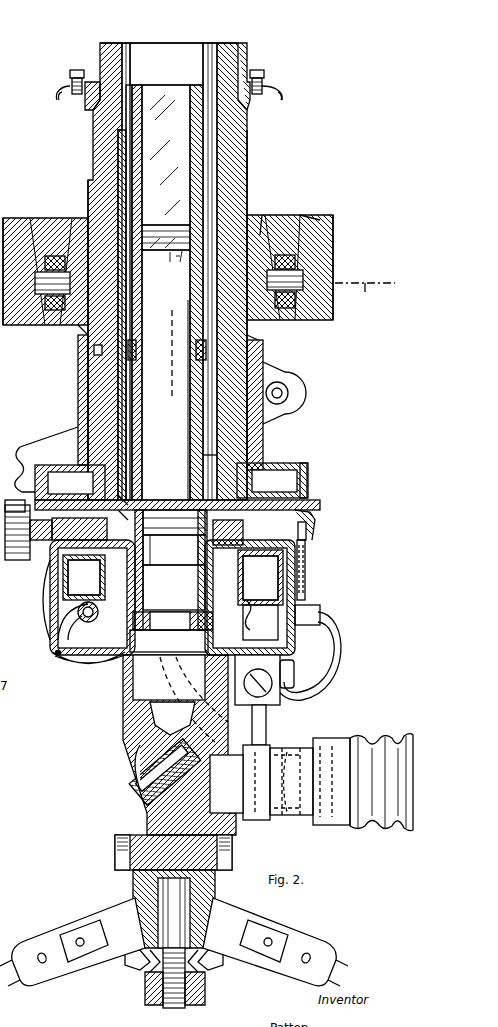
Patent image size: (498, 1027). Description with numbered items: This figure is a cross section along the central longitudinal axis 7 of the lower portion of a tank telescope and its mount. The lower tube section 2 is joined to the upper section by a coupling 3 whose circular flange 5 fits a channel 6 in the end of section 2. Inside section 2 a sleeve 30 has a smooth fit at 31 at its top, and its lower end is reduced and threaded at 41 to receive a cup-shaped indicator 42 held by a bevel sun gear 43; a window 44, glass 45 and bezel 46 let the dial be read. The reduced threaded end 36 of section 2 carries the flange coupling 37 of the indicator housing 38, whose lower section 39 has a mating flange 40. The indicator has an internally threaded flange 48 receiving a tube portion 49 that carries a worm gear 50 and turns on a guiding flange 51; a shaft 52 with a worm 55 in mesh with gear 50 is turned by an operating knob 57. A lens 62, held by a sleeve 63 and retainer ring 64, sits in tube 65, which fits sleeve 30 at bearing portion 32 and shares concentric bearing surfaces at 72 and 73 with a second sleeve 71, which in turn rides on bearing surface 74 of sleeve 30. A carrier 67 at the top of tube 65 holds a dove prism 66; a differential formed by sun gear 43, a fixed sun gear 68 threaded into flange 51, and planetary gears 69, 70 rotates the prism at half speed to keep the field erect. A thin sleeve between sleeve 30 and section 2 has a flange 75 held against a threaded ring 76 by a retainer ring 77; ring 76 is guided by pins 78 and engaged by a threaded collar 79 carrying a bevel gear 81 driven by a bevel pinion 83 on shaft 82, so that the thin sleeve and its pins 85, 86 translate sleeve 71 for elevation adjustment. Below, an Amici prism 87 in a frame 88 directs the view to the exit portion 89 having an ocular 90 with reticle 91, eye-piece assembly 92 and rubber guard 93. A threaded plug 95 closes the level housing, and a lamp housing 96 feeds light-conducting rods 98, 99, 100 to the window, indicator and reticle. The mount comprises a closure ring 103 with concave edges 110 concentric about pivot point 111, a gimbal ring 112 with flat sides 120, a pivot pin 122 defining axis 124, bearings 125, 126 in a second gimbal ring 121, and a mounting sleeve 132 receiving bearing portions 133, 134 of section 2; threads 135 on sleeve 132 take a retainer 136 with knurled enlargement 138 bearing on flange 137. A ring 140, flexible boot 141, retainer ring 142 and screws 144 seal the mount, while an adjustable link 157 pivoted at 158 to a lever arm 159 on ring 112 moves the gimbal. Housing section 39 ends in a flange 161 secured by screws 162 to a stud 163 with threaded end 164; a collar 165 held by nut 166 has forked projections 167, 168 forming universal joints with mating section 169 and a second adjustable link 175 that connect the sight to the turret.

The lower tube section 2 is at (232, 146).
The coupling 3 is at (226, 43).
The circular flange 5 is at (240, 60).
The channel 6 is at (103, 60).
The common central axis 7 is at (174, 340).
The sleeve 30 is at (120, 142).
The smooth fit 31 is at (210, 46).
The bearing portion 32 is at (143, 510).
The reduced threaded lower end 36 is at (272, 480).
The flange coupling 37 is at (308, 506).
The indicator housing 38 is at (311, 551).
The lower housing section 39 is at (57, 657).
The flange 40 is at (315, 515).
The reduced threaded end 41 is at (143, 568).
The cup-shaped indicator 42 is at (310, 600).
The bevel sun gear 43 is at (250, 597).
The window 44 is at (306, 563).
The glass 45 is at (306, 578).
The bezel 46 is at (306, 534).
The internally-threaded flange 48 is at (100, 558).
The tube portion 49 is at (252, 608).
The worm gear 50 is at (260, 622).
The guiding flange 51 is at (86, 622).
The shaft 52 is at (60, 630).
The worm 55 is at (60, 622).
The operating knob 57 is at (88, 668).
The lens 62 is at (174, 552).
The sleeve 63 is at (144, 590).
The retainer ring 64 is at (173, 622).
The tube 65 is at (200, 410).
The dove prism 66 is at (166, 375).
The carrier 67 is at (148, 203).
The sun gear 68 is at (169, 642).
The planetary gear 69 is at (84, 577).
The planetary gear 70 is at (208, 594).
The second sleeve 71 is at (131, 46).
The bearing portion 72 is at (138, 330).
The bearing portion 73 is at (147, 85).
The bearing surface 74 is at (122, 43).
The flange 75 is at (220, 527).
The threaded ring 76 is at (58, 548).
The retainer ring 77 is at (260, 577).
The pin 78 is at (130, 500).
The threaded collar 79 is at (245, 540).
The bevel gear 81 is at (70, 482).
The shaft 82 is at (36, 552).
The bevel pinion 83 is at (22, 506).
The pin 85 is at (135, 360).
The pin 86 is at (200, 360).
The Amici prism 87 is at (178, 730).
The frame 88 is at (142, 778).
The exit portion 89 is at (258, 822).
The ocular 90 is at (290, 752).
The reticle 91 is at (268, 752).
The eye-piece assembly 92 is at (325, 742).
The rubber guard 93 is at (378, 740).
The threaded plug 95 is at (257, 680).
The lamp housing 96 is at (292, 662).
The light-conducting rod 98 is at (312, 648).
The light-conducting rod 99 is at (179, 745).
The light-conducting rod 100 is at (252, 742).
The closure ring 103 is at (330, 242).
The concave edges 110 is at (48, 225).
The pivot point 111 is at (172, 283).
The gimbal ring 112 is at (46, 328).
The flat sides 120 is at (28, 240).
The second gimbal ring 121 is at (275, 228).
The pivot pin 122 is at (304, 278).
The axis 124 is at (365, 295).
The bearing 125 is at (80, 336).
The bearing 126 is at (296, 300).
The telescope mounting sleeve 132 is at (248, 162).
The bearing portion 133 is at (246, 112).
The bearing portion 134 is at (258, 336).
The threads 135 is at (94, 356).
The retainer 136 is at (264, 433).
The external flange 137 is at (95, 376).
The knurled flanged enlargement 138 is at (309, 476).
The ring 140 is at (66, 96).
The flexible boot 141 is at (288, 90).
The retainer ring 142 is at (70, 80).
The screws 144 is at (266, 72).
The adjustable link 157 is at (48, 440).
The pivot 158 is at (282, 393).
The lever arm 159 is at (272, 370).
The flange 161 is at (116, 846).
The screws 162 is at (126, 872).
The stud 163 is at (168, 932).
The reduced threaded end 164 is at (190, 1006).
The collar 165 is at (212, 882).
The nut 166 is at (145, 995).
The forked projection 167 is at (110, 912).
The forked projection 168 is at (240, 915).
The mating universal joint section 169 is at (52, 976).
The second adjustable link 175 is at (336, 960).